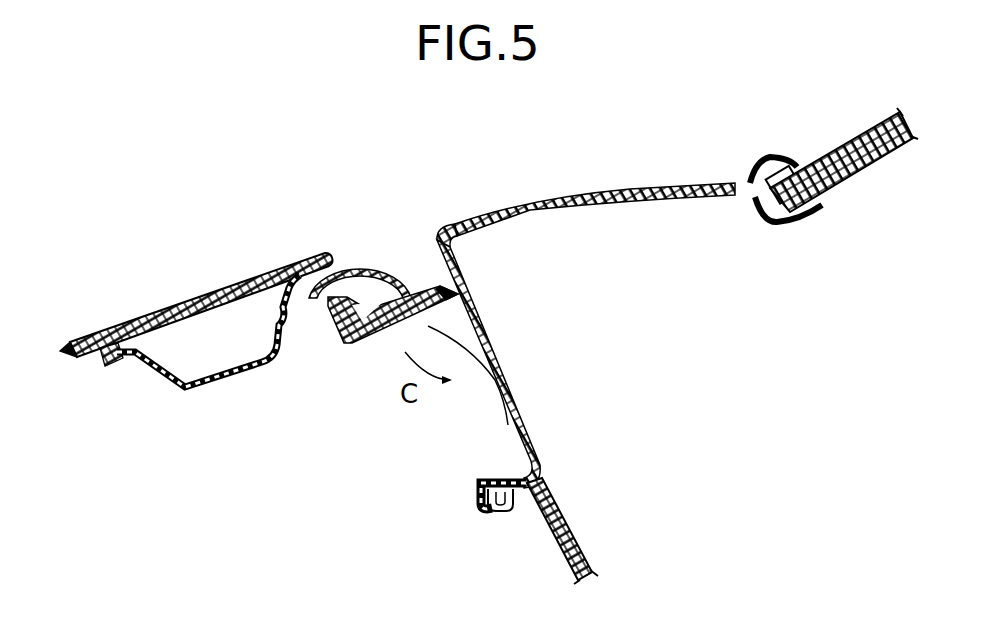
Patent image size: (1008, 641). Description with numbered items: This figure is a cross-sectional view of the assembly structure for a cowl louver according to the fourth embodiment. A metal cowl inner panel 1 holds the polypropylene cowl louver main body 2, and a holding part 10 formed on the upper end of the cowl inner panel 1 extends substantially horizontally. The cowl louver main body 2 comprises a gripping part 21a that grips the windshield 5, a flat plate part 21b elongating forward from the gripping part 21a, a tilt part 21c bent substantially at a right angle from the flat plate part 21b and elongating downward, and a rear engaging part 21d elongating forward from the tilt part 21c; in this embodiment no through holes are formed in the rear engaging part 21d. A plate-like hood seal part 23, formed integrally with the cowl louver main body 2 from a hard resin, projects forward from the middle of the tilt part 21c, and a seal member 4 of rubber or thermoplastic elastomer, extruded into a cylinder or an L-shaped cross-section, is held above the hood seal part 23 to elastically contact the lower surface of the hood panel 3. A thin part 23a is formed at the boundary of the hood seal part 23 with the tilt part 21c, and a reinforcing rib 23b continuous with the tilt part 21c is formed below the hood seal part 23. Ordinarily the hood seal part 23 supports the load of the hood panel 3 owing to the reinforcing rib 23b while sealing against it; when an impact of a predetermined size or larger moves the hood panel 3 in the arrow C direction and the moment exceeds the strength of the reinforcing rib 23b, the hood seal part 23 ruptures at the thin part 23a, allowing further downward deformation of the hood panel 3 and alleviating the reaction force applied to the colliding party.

The cowl inner panel 1 is at (570, 528).
The cowl louver main body 2 is at (500, 208).
The hood panel 3 is at (207, 293).
The seal member 4 is at (356, 266).
The windshield 5 is at (847, 174).
The holding part 10 is at (523, 498).
The gripping part 21a is at (757, 160).
The flat plate part 21b is at (643, 208).
The tilt part 21c is at (513, 388).
The rear engaging part 21d is at (493, 477).
The hood seal part 23 is at (352, 344).
The thin part 23a is at (453, 293).
The reinforcing rib 23b is at (462, 328).